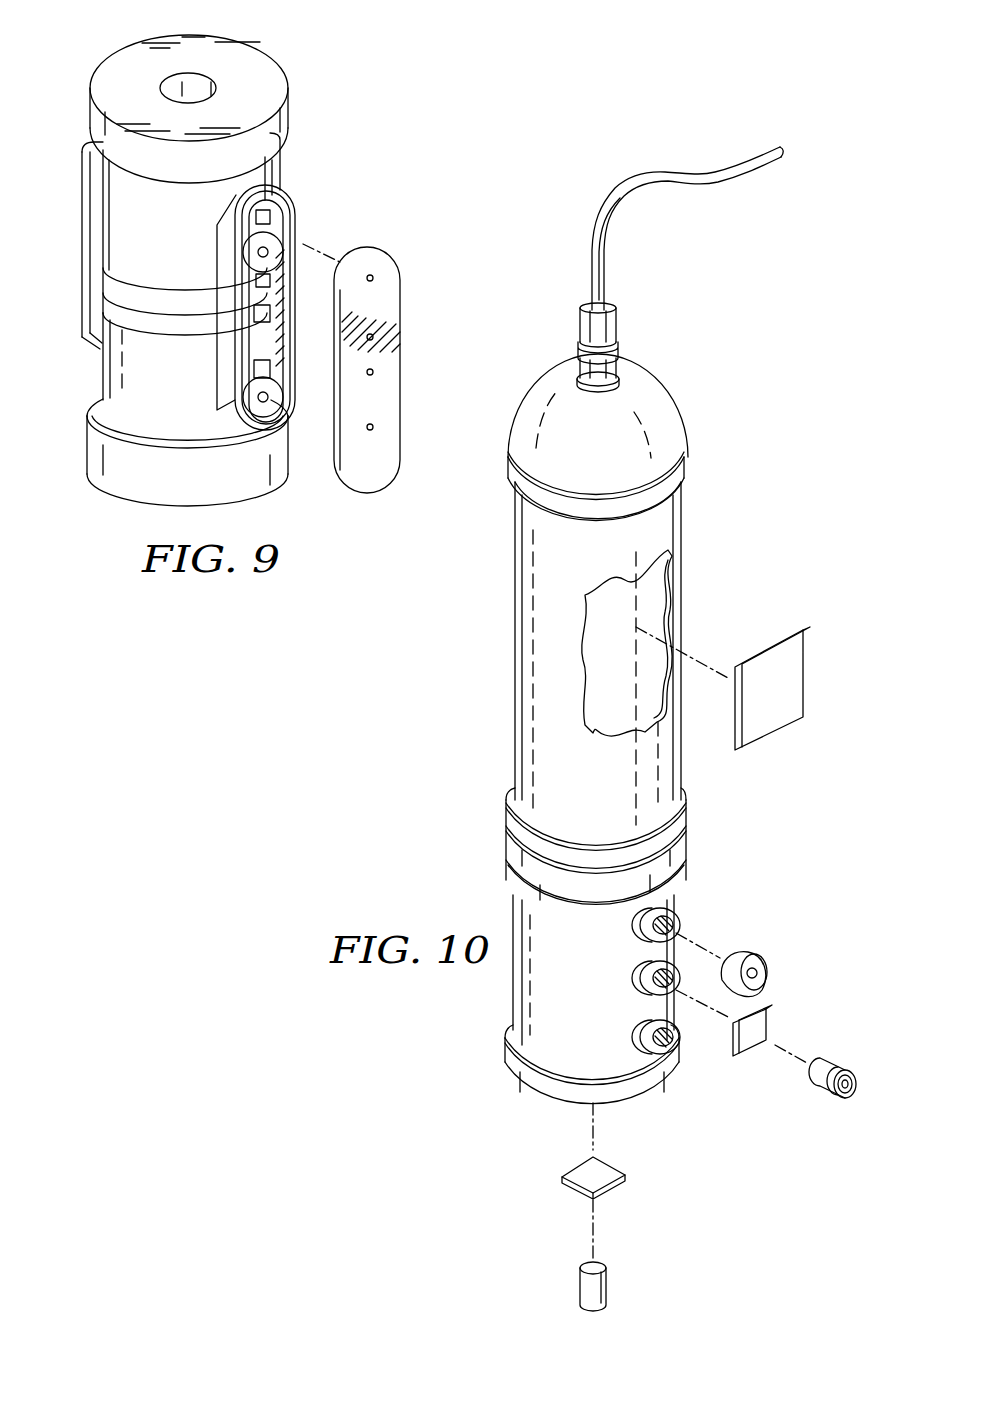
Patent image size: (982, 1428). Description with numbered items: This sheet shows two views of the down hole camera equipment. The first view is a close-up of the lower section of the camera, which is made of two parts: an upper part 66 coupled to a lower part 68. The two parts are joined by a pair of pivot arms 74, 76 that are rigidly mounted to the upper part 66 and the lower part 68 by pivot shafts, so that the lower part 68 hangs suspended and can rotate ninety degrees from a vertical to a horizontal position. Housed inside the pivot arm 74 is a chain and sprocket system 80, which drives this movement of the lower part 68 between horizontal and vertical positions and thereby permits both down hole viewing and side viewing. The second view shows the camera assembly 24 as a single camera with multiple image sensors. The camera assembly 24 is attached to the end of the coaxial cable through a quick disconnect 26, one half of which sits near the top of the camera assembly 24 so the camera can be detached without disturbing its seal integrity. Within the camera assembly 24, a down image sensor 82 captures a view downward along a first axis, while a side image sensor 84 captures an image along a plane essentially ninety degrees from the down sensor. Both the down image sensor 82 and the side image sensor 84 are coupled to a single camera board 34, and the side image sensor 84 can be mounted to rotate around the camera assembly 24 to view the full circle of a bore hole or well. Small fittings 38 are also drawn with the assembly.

In FIG. 10, the camera assembly 24 is at (522, 650).
In FIG. 10, the quick disconnect 26 is at (578, 325).
In FIG. 10, the camera board 34 is at (772, 722).
In FIG. 10, the plug fitting 38 is at (852, 1072).
In FIG. 10, the down image sensor 82 is at (580, 1172).
In FIG. 10, the side image sensor 84 is at (739, 1057).
In FIG. 9, the upper part 66 is at (113, 227).
In FIG. 9, the lower part 68 is at (113, 369).
In FIG. 9, the pivot arm 74 is at (225, 372).
In FIG. 9, the pivot arm 76 is at (85, 281).
In FIG. 9, the chain and sprocket system 80 is at (272, 258).